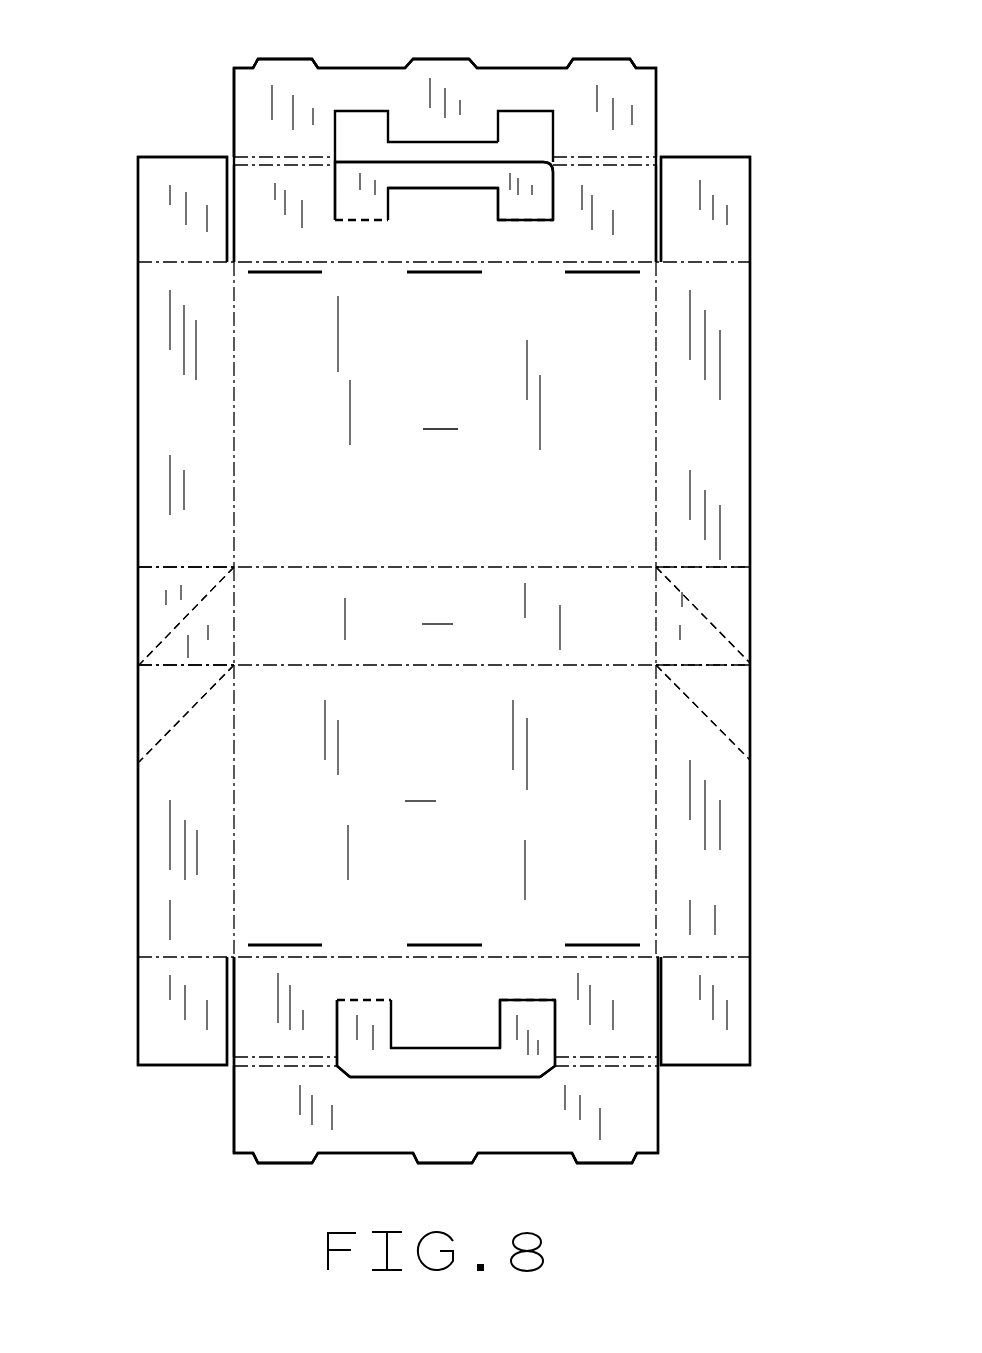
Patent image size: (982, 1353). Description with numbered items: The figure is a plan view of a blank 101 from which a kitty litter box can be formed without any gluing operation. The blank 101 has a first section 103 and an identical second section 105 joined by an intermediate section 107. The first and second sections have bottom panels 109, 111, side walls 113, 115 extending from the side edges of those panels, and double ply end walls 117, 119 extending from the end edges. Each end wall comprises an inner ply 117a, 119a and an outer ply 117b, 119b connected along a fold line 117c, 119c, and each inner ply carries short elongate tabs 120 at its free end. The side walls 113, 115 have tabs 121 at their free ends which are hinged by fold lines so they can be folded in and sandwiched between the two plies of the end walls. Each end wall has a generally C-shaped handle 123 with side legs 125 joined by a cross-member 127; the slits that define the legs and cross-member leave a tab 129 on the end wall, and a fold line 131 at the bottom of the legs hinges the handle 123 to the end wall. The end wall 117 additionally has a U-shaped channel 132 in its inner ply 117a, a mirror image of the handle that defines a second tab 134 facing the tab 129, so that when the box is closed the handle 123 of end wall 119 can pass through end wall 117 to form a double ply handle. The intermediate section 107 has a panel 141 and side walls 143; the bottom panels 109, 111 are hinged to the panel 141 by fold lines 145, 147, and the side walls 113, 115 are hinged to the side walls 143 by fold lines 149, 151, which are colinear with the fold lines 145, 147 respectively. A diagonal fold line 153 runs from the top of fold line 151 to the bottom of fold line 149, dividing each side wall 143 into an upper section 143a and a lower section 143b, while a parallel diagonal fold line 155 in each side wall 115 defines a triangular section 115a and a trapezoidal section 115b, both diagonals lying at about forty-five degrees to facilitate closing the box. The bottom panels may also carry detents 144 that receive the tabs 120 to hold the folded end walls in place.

The blank 101 is at (756, 84).
The first section 103 is at (763, 343).
The second section 105 is at (773, 808).
The intermediate section 107 is at (768, 637).
The bottom panel 109 is at (439, 373).
The bottom panel 111 is at (426, 800).
The side wall 113 is at (138, 405).
The side wall 115 is at (138, 856).
The triangular section 115a is at (163, 721).
The trapezoidal section 115b is at (175, 905).
The end wall 117 is at (660, 112).
The inner ply 117a is at (232, 100).
The outer ply 117b is at (233, 197).
The fold line 117c is at (607, 158).
The end wall 119 is at (236, 1122).
The inner ply 119a is at (237, 1084).
The outer ply 119b is at (237, 983).
The fold line 119c is at (603, 1057).
The tab 120 is at (298, 58).
The tab 121 is at (138, 212).
The handle 123 is at (333, 203).
The side leg 125 is at (333, 187).
The cross-member 127 is at (442, 188).
The tab 129 is at (487, 200).
The fold line 131 is at (354, 220).
The U-shaped channel 132 is at (363, 123).
The second tab 134 is at (533, 122).
The panel 141 is at (452, 616).
The side wall 143 is at (138, 640).
The upper section 143a is at (200, 582).
The lower section 143b is at (215, 638).
The detent 144 is at (290, 273).
The fold line 145 is at (437, 567).
The fold line 147 is at (452, 665).
The fold line 149 is at (163, 567).
The fold line 151 is at (193, 667).
The diagonal fold line 153 is at (173, 627).
The diagonal fold line 155 is at (185, 717).